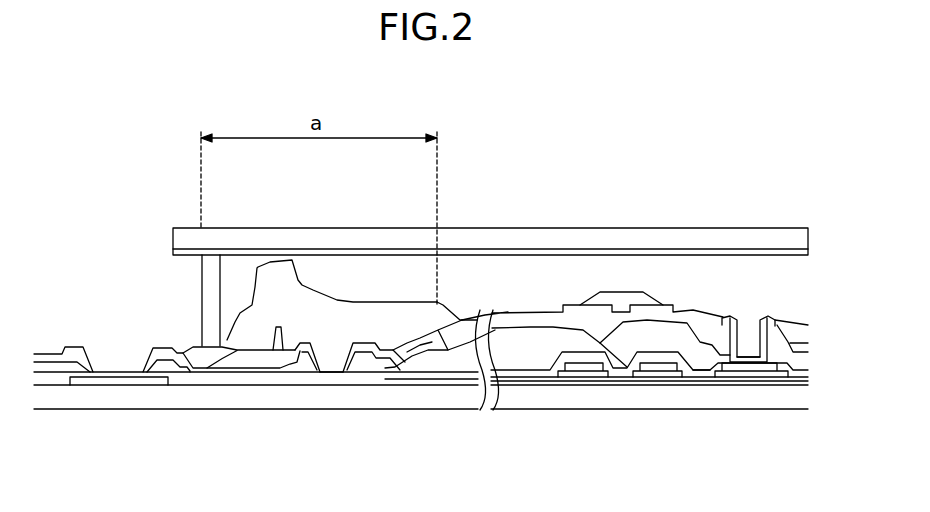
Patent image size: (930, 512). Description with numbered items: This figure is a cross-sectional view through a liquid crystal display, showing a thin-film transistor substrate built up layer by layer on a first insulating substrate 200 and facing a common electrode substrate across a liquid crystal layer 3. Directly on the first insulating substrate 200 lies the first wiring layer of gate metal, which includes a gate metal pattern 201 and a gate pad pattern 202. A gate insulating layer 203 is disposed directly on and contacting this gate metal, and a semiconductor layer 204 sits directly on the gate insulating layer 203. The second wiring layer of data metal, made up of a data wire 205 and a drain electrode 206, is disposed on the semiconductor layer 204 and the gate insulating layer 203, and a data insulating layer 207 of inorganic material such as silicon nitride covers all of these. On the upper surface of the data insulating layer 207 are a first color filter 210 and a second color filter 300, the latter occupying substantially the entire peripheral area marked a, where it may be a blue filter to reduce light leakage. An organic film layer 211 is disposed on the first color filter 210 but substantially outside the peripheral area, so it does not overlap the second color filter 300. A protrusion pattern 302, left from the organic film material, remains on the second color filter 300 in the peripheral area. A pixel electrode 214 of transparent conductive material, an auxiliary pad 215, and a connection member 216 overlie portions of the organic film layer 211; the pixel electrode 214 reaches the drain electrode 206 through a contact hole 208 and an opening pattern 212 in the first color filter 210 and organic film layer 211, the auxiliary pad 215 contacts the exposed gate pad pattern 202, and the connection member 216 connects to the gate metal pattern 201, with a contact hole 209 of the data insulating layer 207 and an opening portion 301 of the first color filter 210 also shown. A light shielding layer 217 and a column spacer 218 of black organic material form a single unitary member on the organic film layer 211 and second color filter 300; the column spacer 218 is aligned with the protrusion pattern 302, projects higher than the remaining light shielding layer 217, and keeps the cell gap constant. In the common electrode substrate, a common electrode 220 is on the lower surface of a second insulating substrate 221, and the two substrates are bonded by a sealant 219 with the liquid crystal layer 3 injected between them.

The liquid crystal layer 3 is at (772, 352).
The first insulating substrate 200 is at (180, 395).
The gate metal pattern 201 is at (317, 372).
The gate pad pattern 202 is at (82, 381).
The gate insulating layer 203 is at (227, 374).
The semiconductor layer 204 is at (587, 371).
The data wire 205 is at (647, 371).
The drain electrode 206 is at (722, 372).
The data insulating layer 207 is at (693, 371).
The contact hole 208 is at (737, 363).
The contact hole 209 is at (374, 362).
The first color filter 210 is at (670, 330).
The organic film layer 211 is at (197, 352).
The opening pattern 212 is at (787, 322).
The pixel electrode 214 is at (592, 305).
The auxiliary pad 215 is at (125, 379).
The connection member 216 is at (342, 373).
The light shielding layer 217 is at (378, 313).
The column spacer 218 is at (281, 262).
The sealant 219 is at (200, 281).
The common electrode 220 is at (510, 250).
The second insulating substrate 221 is at (463, 236).
The second color filter 300 is at (250, 366).
The opening portion 301 is at (384, 376).
The protrusion pattern 302 is at (280, 352).